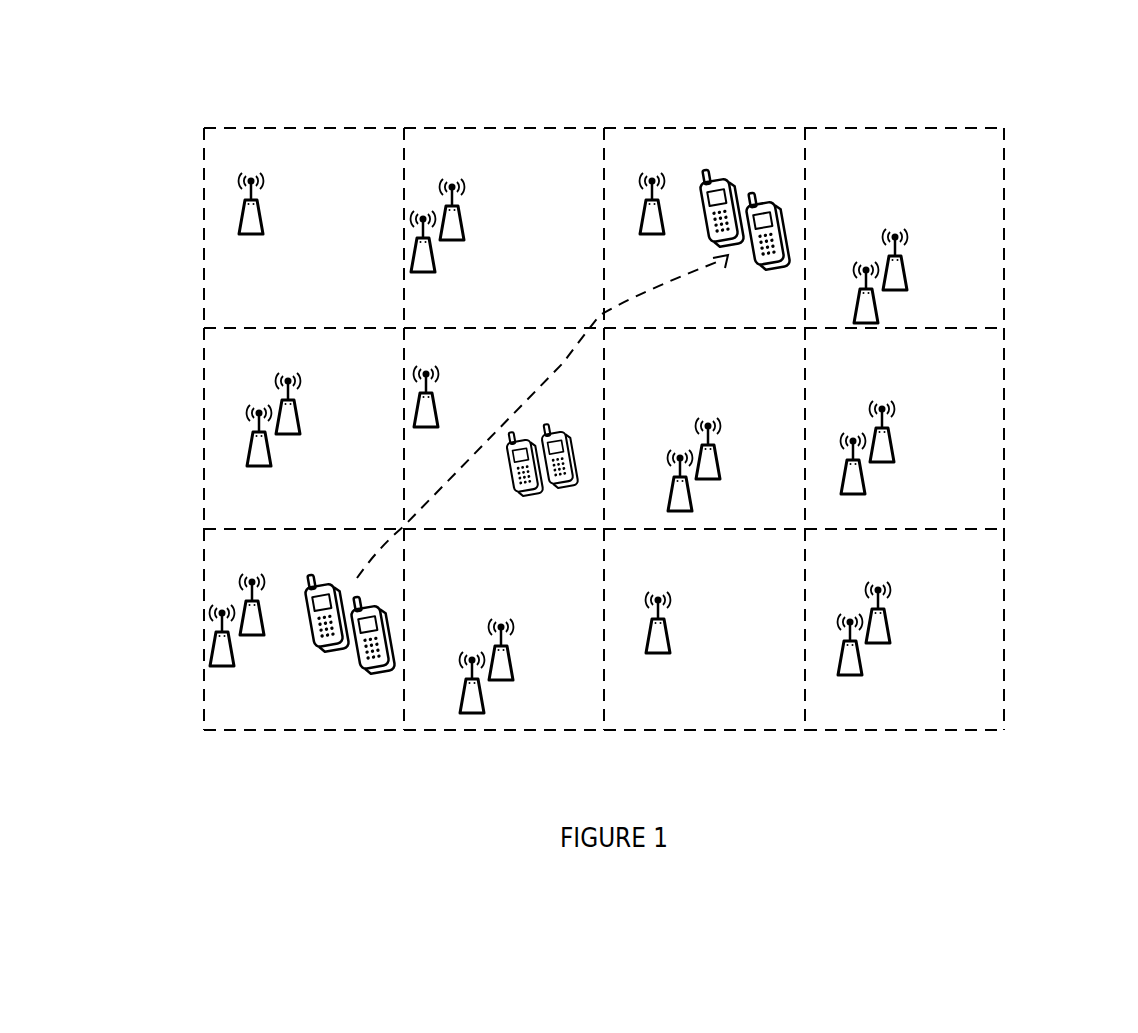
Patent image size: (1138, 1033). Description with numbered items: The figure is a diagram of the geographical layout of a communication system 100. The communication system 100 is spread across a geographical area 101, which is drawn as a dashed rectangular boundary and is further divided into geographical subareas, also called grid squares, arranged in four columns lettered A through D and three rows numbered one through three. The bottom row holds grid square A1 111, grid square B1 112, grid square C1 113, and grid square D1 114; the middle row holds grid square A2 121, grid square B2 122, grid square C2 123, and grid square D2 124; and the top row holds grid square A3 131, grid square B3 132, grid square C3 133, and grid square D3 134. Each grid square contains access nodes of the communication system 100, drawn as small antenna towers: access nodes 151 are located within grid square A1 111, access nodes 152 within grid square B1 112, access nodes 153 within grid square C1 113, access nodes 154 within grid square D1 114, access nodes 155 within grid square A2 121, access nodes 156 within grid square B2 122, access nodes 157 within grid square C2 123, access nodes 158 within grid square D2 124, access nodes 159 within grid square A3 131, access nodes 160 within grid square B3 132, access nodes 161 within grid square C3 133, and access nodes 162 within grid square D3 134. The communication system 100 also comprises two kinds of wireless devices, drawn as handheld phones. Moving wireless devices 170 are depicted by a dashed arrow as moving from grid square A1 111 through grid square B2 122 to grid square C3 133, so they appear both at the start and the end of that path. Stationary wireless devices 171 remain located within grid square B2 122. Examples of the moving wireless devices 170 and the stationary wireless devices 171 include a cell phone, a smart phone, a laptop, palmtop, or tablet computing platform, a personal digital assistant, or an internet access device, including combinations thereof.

The communication system 100 is at (88, 66).
The geographical area 101 is at (1004, 726).
The grid square A1 111 is at (386, 720).
The grid square B1 112 is at (586, 720).
The grid square C1 113 is at (786, 720).
The grid square D1 114 is at (986, 720).
The grid square A2 121 is at (386, 519).
The grid square B2 122 is at (586, 519).
The grid square C2 123 is at (786, 519).
The grid square D2 124 is at (986, 519).
The grid square A3 131 is at (386, 319).
The grid square B3 132 is at (586, 319).
The grid square C3 133 is at (786, 319).
The grid square D3 134 is at (986, 319).
The access nodes 151 is at (276, 565).
The access nodes 152 is at (526, 611).
The access nodes 153 is at (685, 582).
The access nodes 154 is at (903, 572).
The access nodes 155 is at (311, 364).
The access nodes 156 is at (450, 355).
The access nodes 157 is at (732, 409).
The access nodes 158 is at (905, 393).
The access nodes 159 is at (279, 162).
The access nodes 160 is at (476, 168).
The access nodes 161 is at (680, 159).
The access nodes 162 is at (920, 221).
The moving wireless devices 170 is at (784, 167).
The stationary wireless devices 171 is at (586, 409).